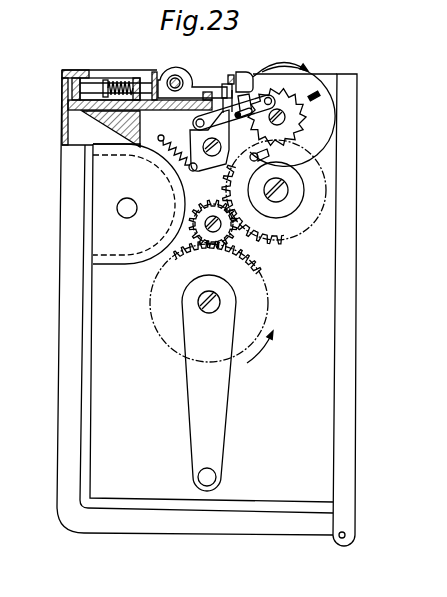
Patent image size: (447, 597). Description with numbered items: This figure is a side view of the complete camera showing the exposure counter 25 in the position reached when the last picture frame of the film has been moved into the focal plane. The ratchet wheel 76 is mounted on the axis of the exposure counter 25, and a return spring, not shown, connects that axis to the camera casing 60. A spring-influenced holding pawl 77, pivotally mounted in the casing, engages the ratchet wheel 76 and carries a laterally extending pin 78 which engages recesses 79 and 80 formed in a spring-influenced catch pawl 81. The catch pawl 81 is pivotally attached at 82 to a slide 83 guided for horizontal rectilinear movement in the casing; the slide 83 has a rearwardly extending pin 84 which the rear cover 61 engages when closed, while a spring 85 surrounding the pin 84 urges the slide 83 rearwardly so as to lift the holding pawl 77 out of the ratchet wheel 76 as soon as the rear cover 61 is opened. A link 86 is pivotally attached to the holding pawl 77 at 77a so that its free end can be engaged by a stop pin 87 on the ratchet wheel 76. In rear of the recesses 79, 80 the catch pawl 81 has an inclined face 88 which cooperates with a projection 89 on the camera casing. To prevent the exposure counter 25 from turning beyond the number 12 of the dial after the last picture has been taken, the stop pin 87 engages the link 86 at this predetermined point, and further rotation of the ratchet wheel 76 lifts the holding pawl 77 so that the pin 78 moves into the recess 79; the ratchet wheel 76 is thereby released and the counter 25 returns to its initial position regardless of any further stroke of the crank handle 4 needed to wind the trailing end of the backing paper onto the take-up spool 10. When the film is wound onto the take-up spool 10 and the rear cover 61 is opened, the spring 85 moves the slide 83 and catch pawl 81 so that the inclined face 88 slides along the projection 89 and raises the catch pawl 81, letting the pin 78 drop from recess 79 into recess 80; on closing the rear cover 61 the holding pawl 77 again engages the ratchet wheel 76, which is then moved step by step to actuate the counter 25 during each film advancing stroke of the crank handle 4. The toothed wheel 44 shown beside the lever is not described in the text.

The crank handle 4 is at (198, 402).
The take-up spool 10 is at (125, 216).
The number 12 of the dial 12 is at (265, 81).
The exposure counter 25 is at (322, 127).
The gear wheel 44 is at (232, 241).
The camera casing 60 is at (335, 322).
The rear cover 61 is at (62, 98).
The ratchet wheel 76 is at (290, 115).
The holding pawl 77 is at (221, 162).
The pivot of link 77a is at (160, 148).
The pin 78 is at (234, 78).
The recess 79 is at (250, 73).
The recess 80 is at (266, 96).
The catch pawl 81 is at (188, 71).
The pivot 82 is at (175, 77).
The slide 83 is at (156, 70).
The pin 84 is at (95, 83).
The spring 85 is at (118, 82).
The link 86 is at (259, 128).
The stop pin 87 is at (306, 69).
The inclined face 88 is at (224, 86).
The projection 89 is at (177, 112).